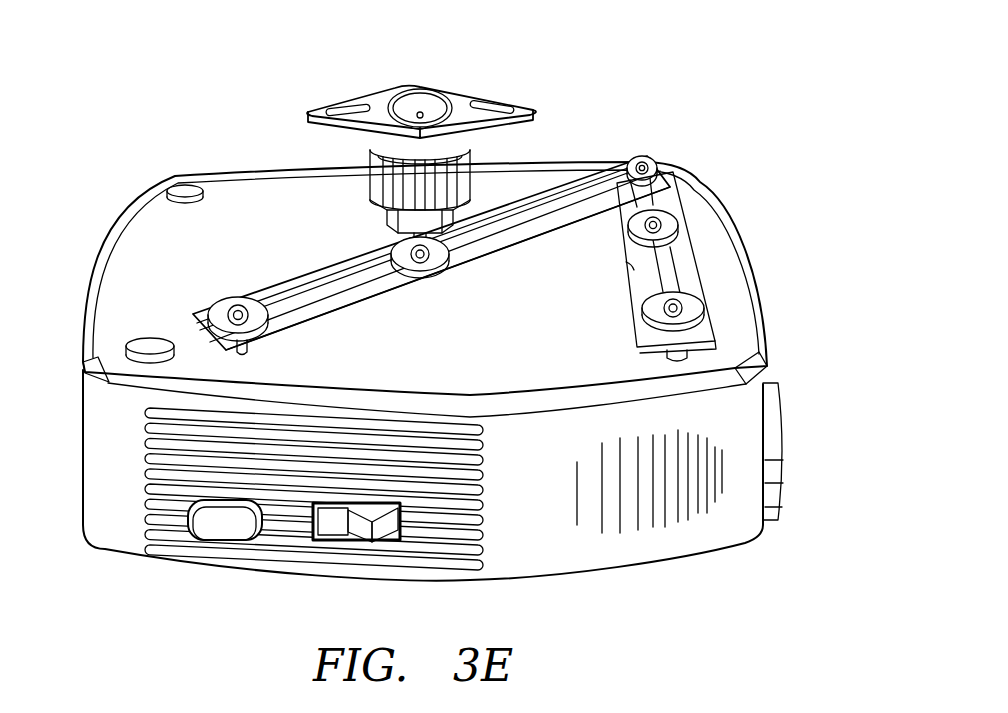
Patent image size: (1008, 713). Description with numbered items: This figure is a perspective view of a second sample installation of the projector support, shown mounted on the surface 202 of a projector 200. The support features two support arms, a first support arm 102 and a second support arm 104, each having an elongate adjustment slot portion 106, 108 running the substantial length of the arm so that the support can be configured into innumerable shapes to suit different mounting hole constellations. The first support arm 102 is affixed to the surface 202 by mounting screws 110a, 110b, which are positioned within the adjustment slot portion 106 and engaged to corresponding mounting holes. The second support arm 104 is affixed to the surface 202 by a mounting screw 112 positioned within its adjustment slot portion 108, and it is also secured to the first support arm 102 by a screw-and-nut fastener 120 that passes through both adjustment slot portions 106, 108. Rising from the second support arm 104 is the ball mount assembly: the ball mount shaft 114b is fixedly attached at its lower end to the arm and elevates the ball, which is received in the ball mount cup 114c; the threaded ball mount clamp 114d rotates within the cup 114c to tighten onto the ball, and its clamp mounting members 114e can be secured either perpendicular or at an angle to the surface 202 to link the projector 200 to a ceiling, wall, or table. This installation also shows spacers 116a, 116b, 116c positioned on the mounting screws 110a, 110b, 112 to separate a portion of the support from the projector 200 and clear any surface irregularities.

The projector 200 is at (555, 506).
The surface 202 is at (170, 287).
The first support arm 102 is at (680, 252).
The second support arm 104 is at (298, 314).
The adjustment slot portion 106 is at (663, 278).
The adjustment slot portion 108 is at (363, 298).
The mounting screw 110a is at (660, 223).
The mounting screw 110b is at (680, 308).
The mounting screw 112 is at (238, 311).
The ball mount shaft 114b is at (408, 238).
The ball mount cup 114c is at (397, 190).
The ball mount clamp 114d is at (378, 100).
The clamp mounting members 114e is at (318, 108).
The spacer 116a is at (628, 266).
The spacer 116b is at (662, 358).
The spacer 116c is at (238, 356).
The fastener 120 is at (636, 160).